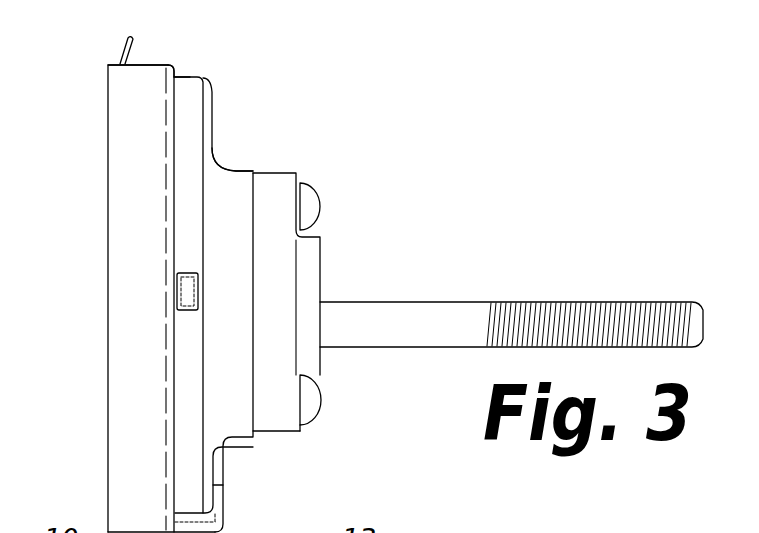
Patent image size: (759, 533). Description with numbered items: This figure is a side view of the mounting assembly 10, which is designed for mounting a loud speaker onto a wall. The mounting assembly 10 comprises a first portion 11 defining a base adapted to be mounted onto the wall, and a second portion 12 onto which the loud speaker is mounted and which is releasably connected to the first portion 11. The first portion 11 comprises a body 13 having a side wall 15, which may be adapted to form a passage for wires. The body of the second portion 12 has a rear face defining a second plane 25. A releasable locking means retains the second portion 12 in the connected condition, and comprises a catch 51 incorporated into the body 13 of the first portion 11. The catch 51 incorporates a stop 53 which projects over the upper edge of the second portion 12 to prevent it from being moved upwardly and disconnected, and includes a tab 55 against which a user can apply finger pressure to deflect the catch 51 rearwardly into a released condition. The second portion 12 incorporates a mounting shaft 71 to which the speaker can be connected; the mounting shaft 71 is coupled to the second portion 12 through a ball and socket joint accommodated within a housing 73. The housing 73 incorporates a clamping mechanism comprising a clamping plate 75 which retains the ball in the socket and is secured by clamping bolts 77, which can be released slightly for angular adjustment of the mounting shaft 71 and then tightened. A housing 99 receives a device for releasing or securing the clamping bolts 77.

The mounting assembly 10 is at (86, 116).
The first portion 11 is at (162, 60).
The second portion 12 is at (215, 80).
The body 13 is at (113, 257).
The side wall 15 is at (118, 378).
The second plane 25 is at (248, 436).
The catch 51 is at (129, 38).
The stop 53 is at (180, 71).
The tab 55 is at (121, 64).
The mounting shaft 71 is at (452, 302).
The housing 73 is at (238, 169).
The clamping plate 75 is at (294, 173).
The clamping bolts 77 is at (321, 200).
The housing 99 is at (186, 299).